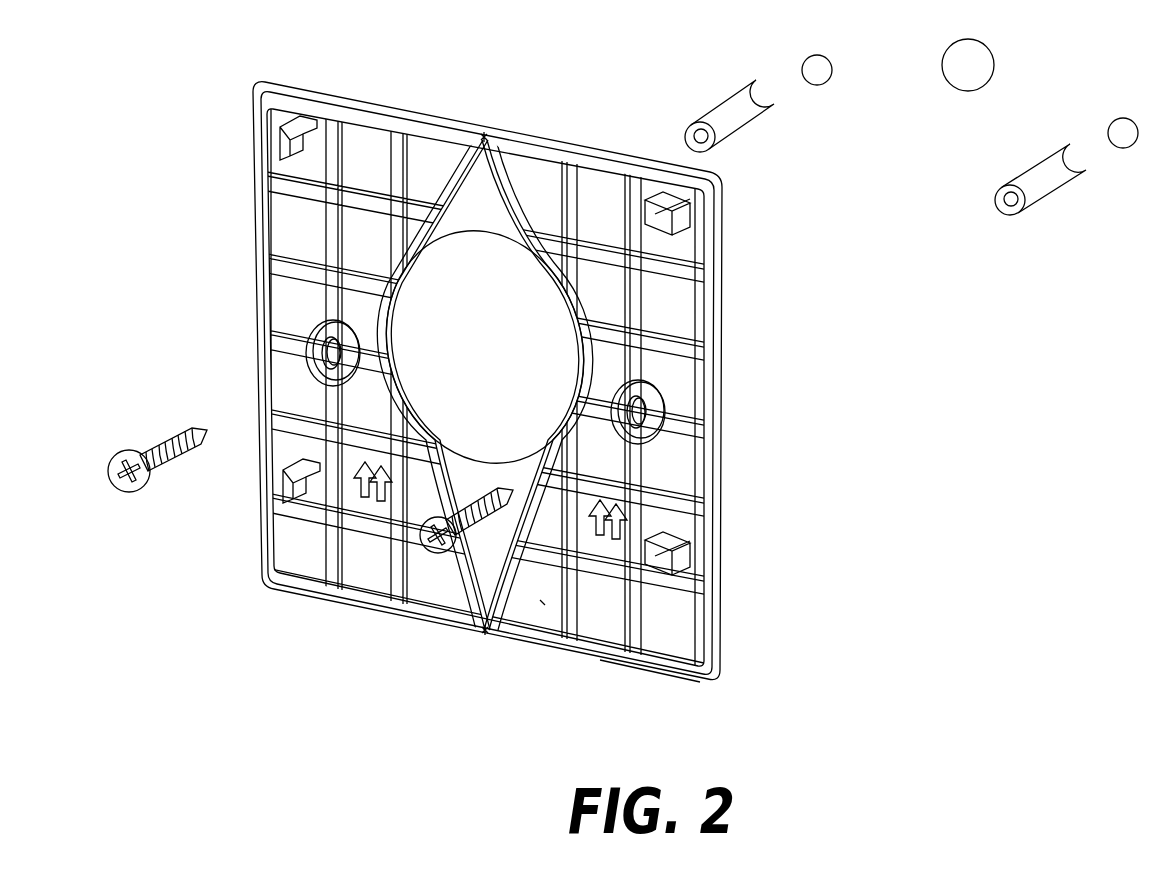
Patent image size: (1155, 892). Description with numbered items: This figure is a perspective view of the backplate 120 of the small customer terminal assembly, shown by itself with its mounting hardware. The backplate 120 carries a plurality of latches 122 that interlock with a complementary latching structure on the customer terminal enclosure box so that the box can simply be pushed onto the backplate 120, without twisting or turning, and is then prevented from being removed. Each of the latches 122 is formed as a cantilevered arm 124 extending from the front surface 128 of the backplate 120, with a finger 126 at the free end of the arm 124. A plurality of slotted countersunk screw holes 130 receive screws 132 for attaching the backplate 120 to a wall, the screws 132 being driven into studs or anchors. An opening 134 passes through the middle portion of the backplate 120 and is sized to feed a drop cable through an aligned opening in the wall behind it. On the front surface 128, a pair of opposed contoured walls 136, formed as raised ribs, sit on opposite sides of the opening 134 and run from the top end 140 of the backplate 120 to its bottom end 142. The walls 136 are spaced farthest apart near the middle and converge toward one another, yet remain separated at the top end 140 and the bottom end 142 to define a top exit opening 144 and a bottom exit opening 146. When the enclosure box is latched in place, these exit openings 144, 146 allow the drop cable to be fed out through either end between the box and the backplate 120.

The backplate 120 is at (675, 303).
The latches 122 is at (690, 568).
The cantilevered arms 124 is at (666, 196).
The finger 126 is at (668, 214).
The front surface 128 is at (540, 605).
The slotted countersunk screw holes 130 is at (333, 352).
The screws 132 is at (130, 493).
The opening 134 is at (513, 290).
The contoured walls 136 is at (445, 198).
The top end 140 is at (685, 145).
The bottom end 142 is at (626, 672).
The top exit opening 144 is at (487, 137).
The bottom exit opening 146 is at (485, 632).